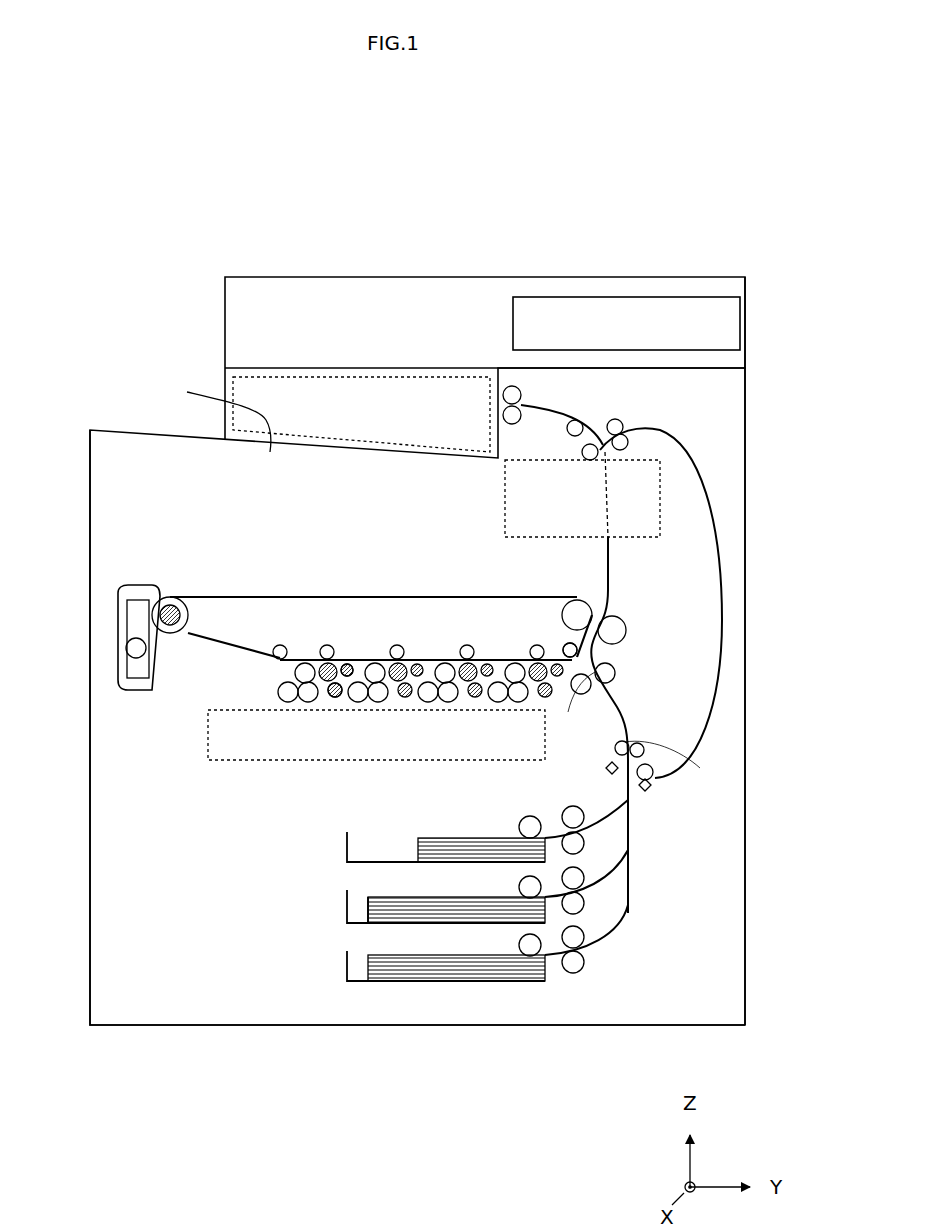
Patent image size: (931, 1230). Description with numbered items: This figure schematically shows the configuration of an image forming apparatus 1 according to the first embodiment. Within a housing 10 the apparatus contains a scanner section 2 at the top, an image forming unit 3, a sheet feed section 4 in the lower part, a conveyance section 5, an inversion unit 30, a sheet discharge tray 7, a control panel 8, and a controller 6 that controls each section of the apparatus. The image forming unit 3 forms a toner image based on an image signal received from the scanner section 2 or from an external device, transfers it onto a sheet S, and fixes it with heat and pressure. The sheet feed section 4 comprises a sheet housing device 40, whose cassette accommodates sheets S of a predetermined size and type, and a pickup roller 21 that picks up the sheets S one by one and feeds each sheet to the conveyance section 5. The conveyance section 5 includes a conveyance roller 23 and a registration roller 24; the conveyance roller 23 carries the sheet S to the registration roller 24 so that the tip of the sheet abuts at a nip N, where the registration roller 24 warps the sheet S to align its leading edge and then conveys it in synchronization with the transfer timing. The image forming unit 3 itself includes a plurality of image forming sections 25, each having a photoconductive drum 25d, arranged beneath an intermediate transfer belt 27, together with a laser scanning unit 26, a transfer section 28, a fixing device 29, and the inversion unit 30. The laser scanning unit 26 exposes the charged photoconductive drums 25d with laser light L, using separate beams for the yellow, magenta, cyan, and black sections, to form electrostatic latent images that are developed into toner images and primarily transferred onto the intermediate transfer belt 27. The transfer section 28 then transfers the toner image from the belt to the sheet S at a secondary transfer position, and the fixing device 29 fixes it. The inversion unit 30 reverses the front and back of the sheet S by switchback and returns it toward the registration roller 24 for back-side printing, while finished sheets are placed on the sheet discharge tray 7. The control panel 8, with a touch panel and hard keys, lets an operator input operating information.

The image forming apparatus 1 is at (490, 228).
The scanner section 2 is at (345, 308).
The image forming unit 3 is at (105, 548).
The sheet feed section 4 is at (338, 890).
The conveyance section 5 is at (672, 725).
The controller 6 is at (262, 375).
The sheet discharge tray 7 is at (217, 412).
The control panel 8 is at (615, 313).
The housing 10 is at (748, 944).
The pickup roller 21 is at (518, 828).
The conveyance roller 23 is at (660, 752).
The registration roller 24 is at (583, 695).
The image forming section 25 is at (528, 650).
The photoconductive drum 25d is at (332, 645).
The laser scanning unit 26 is at (205, 748).
The intermediate transfer belt 27 is at (431, 596).
The transfer section 28 is at (622, 622).
The fixing device 29 is at (515, 538).
The inversion unit 30 is at (735, 540).
The sheet housing device 40 is at (346, 850).
The sheet S is at (430, 838).
The nip N is at (612, 685).
The laser light L is at (528, 702).